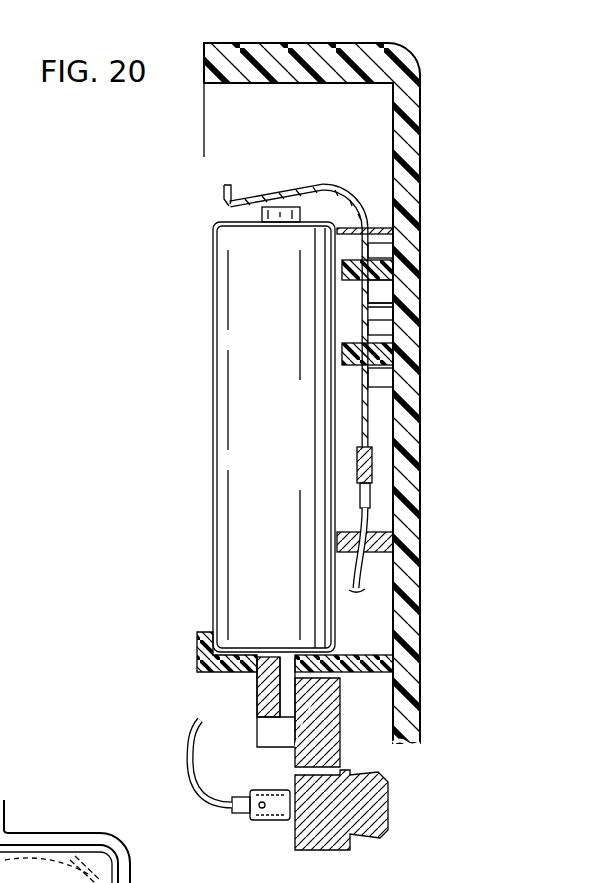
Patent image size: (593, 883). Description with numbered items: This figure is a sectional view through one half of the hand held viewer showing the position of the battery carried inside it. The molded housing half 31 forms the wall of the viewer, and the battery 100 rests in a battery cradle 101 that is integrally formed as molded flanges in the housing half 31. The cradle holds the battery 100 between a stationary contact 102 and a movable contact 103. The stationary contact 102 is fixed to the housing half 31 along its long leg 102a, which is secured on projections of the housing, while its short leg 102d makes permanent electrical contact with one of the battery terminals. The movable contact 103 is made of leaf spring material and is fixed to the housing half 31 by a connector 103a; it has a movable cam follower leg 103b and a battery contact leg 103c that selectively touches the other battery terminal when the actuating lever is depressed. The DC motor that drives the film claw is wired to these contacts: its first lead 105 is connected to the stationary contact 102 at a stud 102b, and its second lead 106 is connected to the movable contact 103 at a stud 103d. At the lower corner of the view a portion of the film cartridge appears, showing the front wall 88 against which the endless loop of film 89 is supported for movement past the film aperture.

The molded housing half 31 is at (421, 212).
The battery 100 is at (237, 512).
The battery cradle 101 is at (343, 667).
The stationary contact 102 is at (334, 186).
The long leg 102a is at (362, 340).
The stud 102b is at (357, 460).
The short leg 102d is at (270, 195).
The movable contact 103 is at (257, 700).
The connector 103a is at (380, 800).
The cam follower leg 103b is at (300, 715).
The battery contact leg 103c is at (255, 670).
The stud 103d is at (278, 826).
The first lead 105 is at (368, 527).
The second lead 106 is at (185, 768).
The front wall 88 is at (135, 878).
The endless loop of film 89 is at (30, 881).